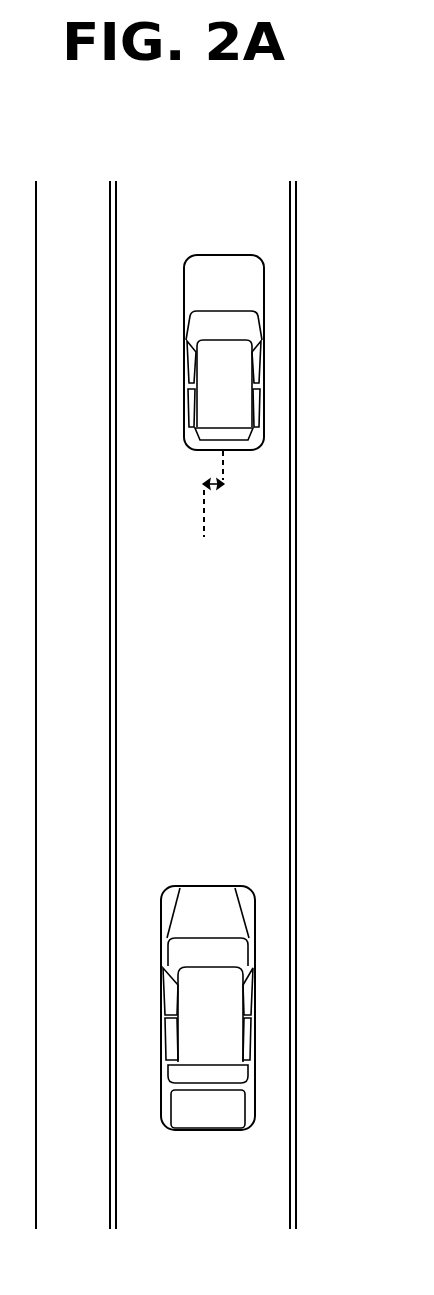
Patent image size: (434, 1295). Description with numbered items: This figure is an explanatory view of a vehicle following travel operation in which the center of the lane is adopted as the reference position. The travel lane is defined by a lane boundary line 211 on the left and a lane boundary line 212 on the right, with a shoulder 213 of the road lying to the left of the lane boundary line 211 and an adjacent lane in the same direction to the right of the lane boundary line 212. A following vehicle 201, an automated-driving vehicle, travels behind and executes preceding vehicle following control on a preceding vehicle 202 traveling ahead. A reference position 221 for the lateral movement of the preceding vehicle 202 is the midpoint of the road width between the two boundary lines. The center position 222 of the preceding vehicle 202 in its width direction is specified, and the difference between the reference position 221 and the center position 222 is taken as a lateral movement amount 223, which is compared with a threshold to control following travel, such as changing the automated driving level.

The following vehicle 201 is at (256, 938).
The preceding vehicle 202 is at (231, 254).
The lane boundary line 211 is at (110, 347).
The lane boundary line 212 is at (298, 279).
The shoulder 213 is at (79, 198).
The reference position 221 is at (201, 501).
The center position 222 is at (226, 467).
The lateral movement amount 223 is at (213, 489).